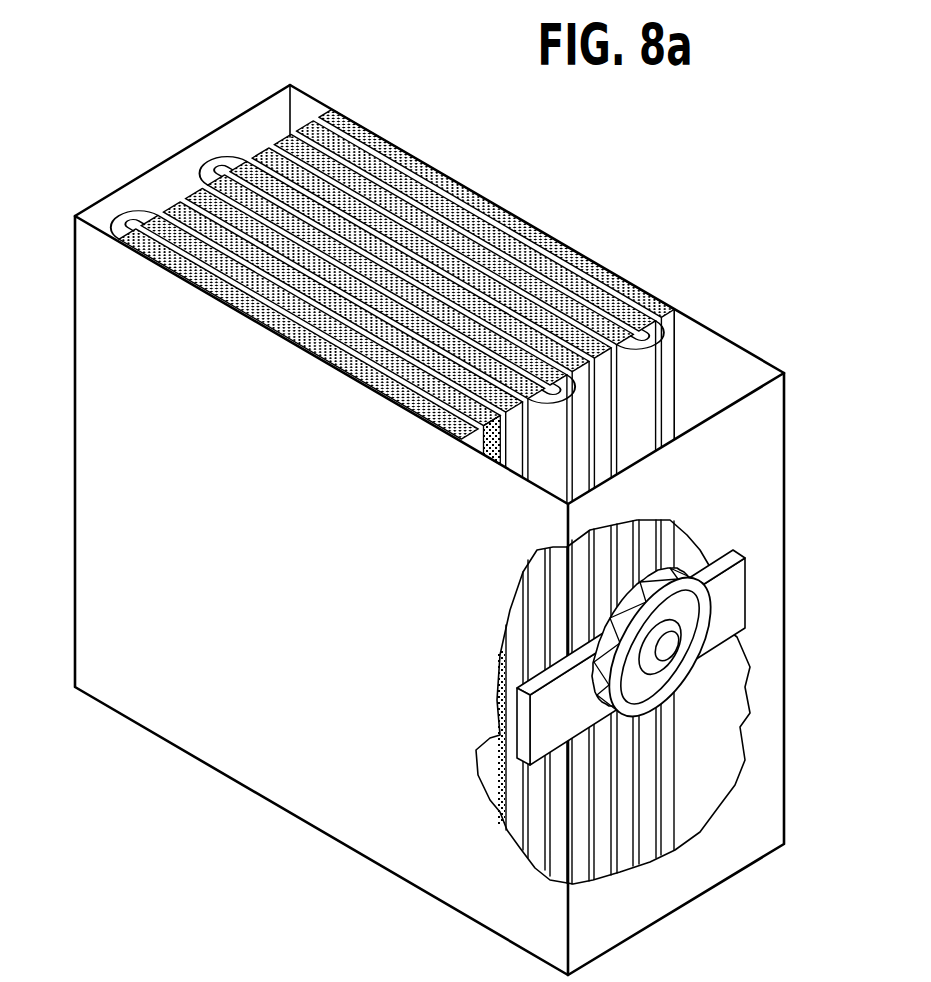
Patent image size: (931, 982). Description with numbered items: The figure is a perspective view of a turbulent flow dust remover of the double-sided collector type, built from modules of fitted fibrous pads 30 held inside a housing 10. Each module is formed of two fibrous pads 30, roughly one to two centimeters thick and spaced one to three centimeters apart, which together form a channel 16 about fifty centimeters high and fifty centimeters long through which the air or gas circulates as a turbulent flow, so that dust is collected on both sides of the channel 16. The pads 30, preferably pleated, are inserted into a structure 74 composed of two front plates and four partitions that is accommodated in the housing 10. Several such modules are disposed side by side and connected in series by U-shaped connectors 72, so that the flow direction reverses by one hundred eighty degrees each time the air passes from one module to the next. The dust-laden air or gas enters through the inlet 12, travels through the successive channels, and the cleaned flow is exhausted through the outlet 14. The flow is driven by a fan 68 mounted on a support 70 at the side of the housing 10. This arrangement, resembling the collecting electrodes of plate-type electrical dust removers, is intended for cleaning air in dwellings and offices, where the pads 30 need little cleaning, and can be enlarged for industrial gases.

The housing 10 is at (323, 725).
The inlet 12 is at (481, 428).
The outlet 14 is at (307, 116).
The channel 16 is at (412, 175).
The fibrous pads 30 is at (456, 180).
The fan 68 is at (680, 667).
The support 70 is at (556, 710).
The U-shaped connectors 72 is at (217, 158).
The structure 74 is at (278, 145).